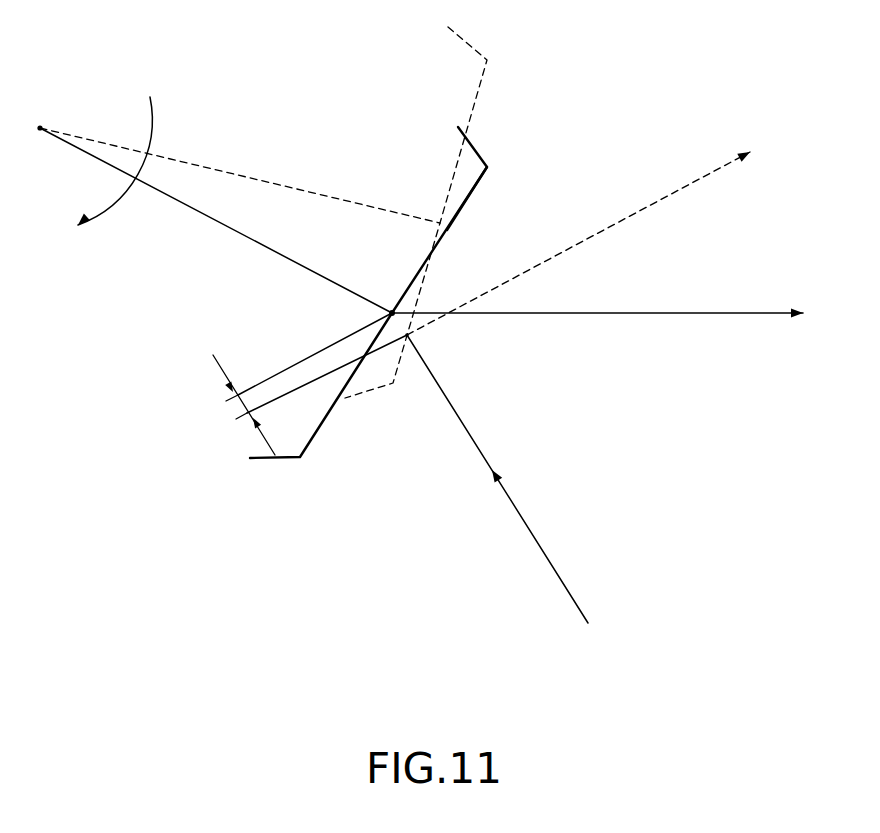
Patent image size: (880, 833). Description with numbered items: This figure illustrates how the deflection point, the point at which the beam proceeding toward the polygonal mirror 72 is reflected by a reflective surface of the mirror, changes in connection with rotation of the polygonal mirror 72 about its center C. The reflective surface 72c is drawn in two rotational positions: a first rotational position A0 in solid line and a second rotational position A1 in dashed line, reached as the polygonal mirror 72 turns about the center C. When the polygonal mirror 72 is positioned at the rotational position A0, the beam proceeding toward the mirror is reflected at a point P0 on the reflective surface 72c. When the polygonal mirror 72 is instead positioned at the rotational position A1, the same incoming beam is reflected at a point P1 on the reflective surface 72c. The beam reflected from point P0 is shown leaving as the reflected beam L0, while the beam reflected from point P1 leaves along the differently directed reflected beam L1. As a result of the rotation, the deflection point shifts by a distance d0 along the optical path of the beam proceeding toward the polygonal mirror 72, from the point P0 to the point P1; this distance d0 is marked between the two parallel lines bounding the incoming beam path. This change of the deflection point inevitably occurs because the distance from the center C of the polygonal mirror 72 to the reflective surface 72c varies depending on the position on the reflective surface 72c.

The center of the polygonal mirror C is at (42, 122).
The rotational position A1 is at (495, 60).
The rotational position A0 is at (495, 165).
The reflected light beam (rotated position) L1 is at (725, 167).
The reflected light beam (initial position) L0 is at (752, 313).
The point P0 is at (387, 313).
The point P1 is at (415, 336).
The distance d0 is at (236, 405).
The reflective surface 72c is at (315, 437).
The polygonal mirror 72 is at (213, 475).